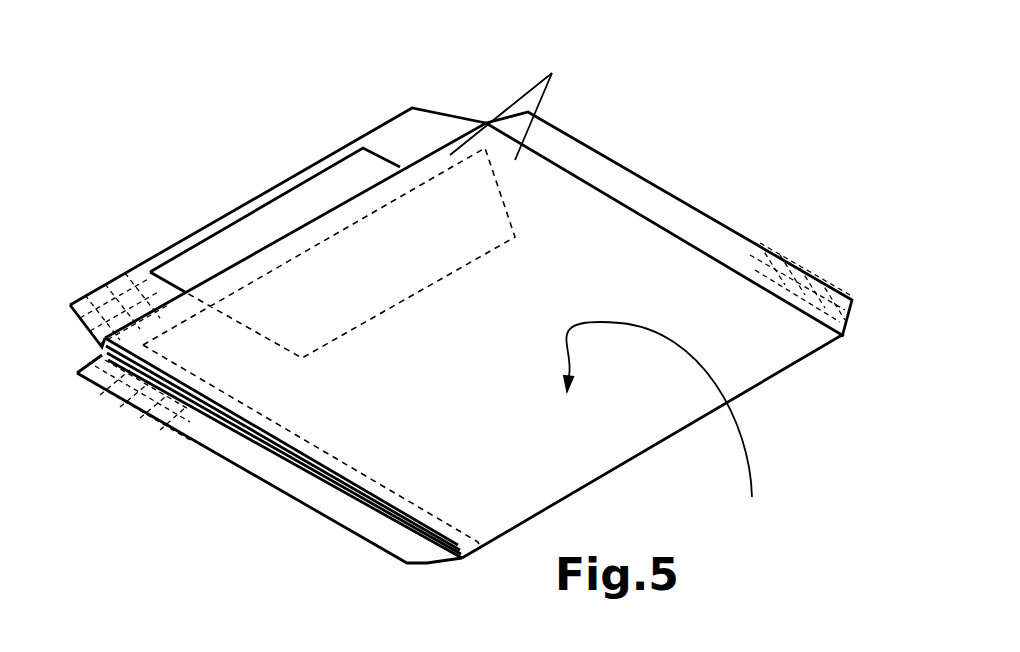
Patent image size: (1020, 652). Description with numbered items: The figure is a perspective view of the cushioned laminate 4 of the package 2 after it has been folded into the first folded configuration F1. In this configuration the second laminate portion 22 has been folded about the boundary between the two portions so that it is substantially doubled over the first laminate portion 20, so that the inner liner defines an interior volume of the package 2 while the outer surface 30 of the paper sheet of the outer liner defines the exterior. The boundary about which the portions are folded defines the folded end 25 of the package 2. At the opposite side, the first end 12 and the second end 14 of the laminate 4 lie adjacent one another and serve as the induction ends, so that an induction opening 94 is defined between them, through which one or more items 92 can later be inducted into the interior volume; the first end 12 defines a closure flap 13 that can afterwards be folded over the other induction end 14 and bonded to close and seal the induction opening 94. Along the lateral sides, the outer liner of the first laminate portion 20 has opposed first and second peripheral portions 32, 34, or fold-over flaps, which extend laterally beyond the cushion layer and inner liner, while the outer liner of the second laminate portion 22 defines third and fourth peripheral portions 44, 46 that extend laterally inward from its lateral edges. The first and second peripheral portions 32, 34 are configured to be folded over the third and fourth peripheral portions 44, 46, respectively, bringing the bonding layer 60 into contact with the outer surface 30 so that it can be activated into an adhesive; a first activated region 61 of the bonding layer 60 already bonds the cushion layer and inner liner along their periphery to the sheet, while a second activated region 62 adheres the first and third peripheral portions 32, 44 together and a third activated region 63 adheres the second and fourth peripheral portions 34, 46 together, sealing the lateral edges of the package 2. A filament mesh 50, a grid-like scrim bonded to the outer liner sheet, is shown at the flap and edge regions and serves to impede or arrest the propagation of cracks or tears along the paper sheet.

The package 2 is at (461, 332).
The cushioned laminate 4 is at (461, 332).
The first end 12 is at (218, 220).
The closure flap 13 is at (148, 290).
The second end 14 is at (280, 233).
The first laminate portion 20 is at (427, 562).
The second laminate portion 22 is at (518, 205).
The folded end 25 is at (597, 480).
The outer surface 30 is at (567, 260).
The first peripheral portion 32 is at (315, 493).
The second peripheral portion 34 is at (700, 228).
The third peripheral portion 44 is at (287, 437).
The fourth peripheral portion 46 is at (678, 245).
The filament mesh 50 is at (107, 310).
The bonding layer 60 is at (461, 285).
The first activated region 61 is at (511, 105).
The second activated region 62 is at (242, 450).
The third activated region 63 is at (557, 142).
The items 92 is at (352, 166).
The induction opening 94 is at (333, 203).
The first folded configuration F1 is at (151, 464).